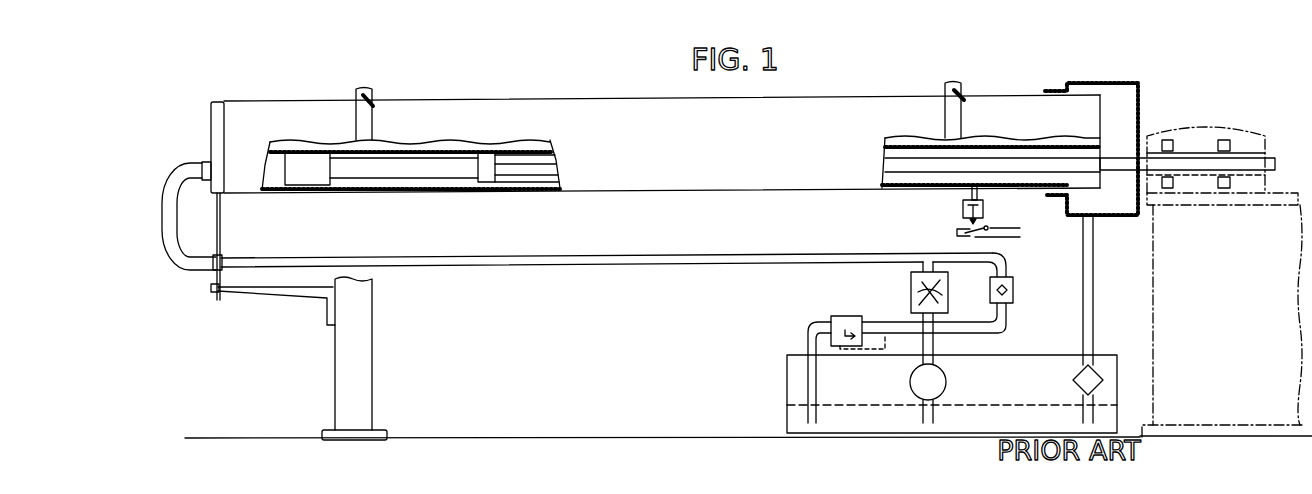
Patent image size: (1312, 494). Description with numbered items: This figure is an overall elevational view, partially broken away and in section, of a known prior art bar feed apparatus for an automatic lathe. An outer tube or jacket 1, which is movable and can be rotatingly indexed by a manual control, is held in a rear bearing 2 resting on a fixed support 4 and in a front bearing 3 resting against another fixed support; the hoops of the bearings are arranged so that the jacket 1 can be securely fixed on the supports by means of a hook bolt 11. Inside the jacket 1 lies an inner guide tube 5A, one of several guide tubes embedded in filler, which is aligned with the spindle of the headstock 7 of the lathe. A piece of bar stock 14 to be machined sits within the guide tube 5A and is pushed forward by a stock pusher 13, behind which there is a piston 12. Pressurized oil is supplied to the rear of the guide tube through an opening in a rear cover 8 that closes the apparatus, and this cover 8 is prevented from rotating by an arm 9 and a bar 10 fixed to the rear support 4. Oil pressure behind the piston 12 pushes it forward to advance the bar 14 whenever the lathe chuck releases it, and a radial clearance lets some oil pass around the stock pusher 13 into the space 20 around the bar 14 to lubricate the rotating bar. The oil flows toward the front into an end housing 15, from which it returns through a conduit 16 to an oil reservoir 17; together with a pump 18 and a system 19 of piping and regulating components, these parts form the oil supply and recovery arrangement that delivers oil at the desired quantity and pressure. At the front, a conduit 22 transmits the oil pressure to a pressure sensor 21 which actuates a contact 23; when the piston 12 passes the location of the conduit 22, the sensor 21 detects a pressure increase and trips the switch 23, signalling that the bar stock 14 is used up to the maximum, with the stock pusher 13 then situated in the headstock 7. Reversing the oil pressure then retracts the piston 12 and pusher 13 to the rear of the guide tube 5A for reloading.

The outer tube or jacket 1 is at (447, 115).
The rear bearing 2 is at (357, 115).
The front bearing 3 is at (947, 115).
The fixed support 4 is at (355, 373).
The inner guide tube 5A is at (490, 152).
The headstock 7 is at (1235, 128).
The rear cover 8 is at (220, 105).
The arm 9 is at (222, 215).
The bar 10 is at (265, 290).
The hook bolt 11 is at (374, 103).
The piston 12 is at (310, 170).
The stock pusher 13 is at (398, 170).
The bar stock 14 is at (523, 168).
The end housing 15 is at (1100, 83).
The conduit 16 is at (1094, 273).
The oil reservoir 17 is at (1040, 365).
The pump 18 is at (947, 381).
The system of piping and regulating components 19 is at (889, 320).
The space 20 is at (527, 152).
The pressure sensor 21 is at (985, 208).
The conduit 22 is at (965, 193).
The contact 23 is at (1010, 231).